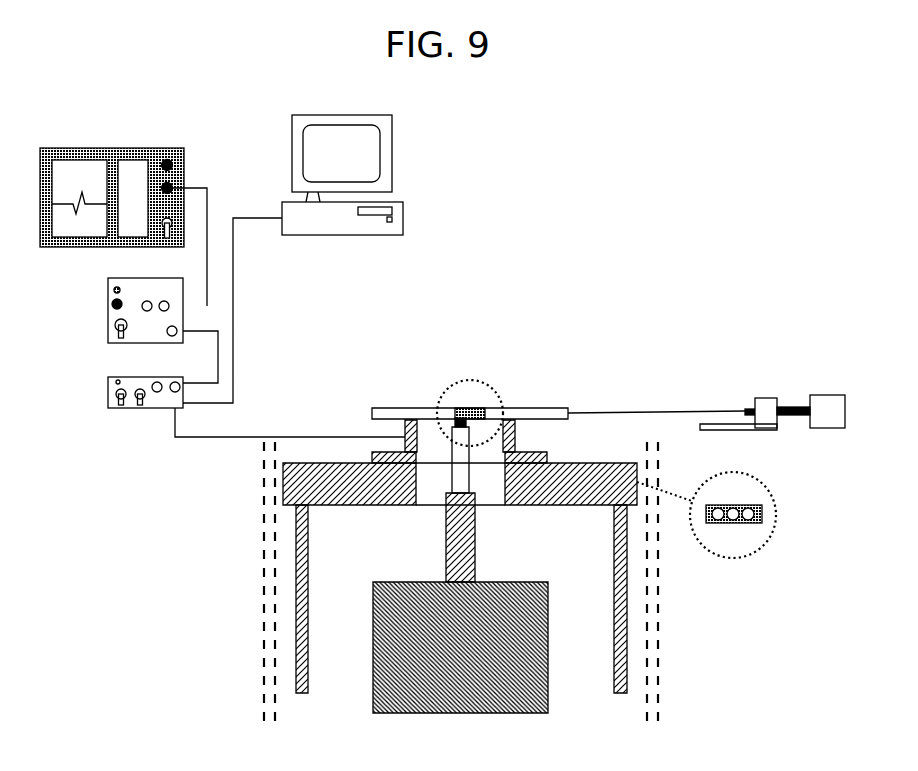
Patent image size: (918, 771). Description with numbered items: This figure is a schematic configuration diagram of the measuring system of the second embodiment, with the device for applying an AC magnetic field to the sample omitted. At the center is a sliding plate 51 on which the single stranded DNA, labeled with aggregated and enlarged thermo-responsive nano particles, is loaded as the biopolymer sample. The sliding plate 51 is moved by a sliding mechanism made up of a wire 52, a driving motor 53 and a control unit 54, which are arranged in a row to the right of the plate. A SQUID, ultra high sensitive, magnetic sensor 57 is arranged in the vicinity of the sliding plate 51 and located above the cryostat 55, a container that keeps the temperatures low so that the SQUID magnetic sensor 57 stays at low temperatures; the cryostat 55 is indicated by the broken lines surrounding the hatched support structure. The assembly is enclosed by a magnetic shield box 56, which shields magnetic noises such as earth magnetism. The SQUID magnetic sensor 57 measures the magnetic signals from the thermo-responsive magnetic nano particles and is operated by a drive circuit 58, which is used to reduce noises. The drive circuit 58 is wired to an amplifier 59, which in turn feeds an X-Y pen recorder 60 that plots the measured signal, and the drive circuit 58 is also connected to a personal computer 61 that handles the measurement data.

The sliding plate 51 is at (478, 410).
The wire 52 is at (657, 410).
The driving motor 53 is at (768, 398).
The control unit 54 is at (835, 395).
The cryostat 55 is at (263, 612).
The magnetic shield box 56 is at (295, 652).
The SQUID magnetic sensor 57 is at (456, 417).
The drive circuit 58 is at (107, 391).
The amplifier 59 is at (107, 306).
The X-Y pen recorder 60 is at (147, 148).
The personal computer 61 is at (393, 152).